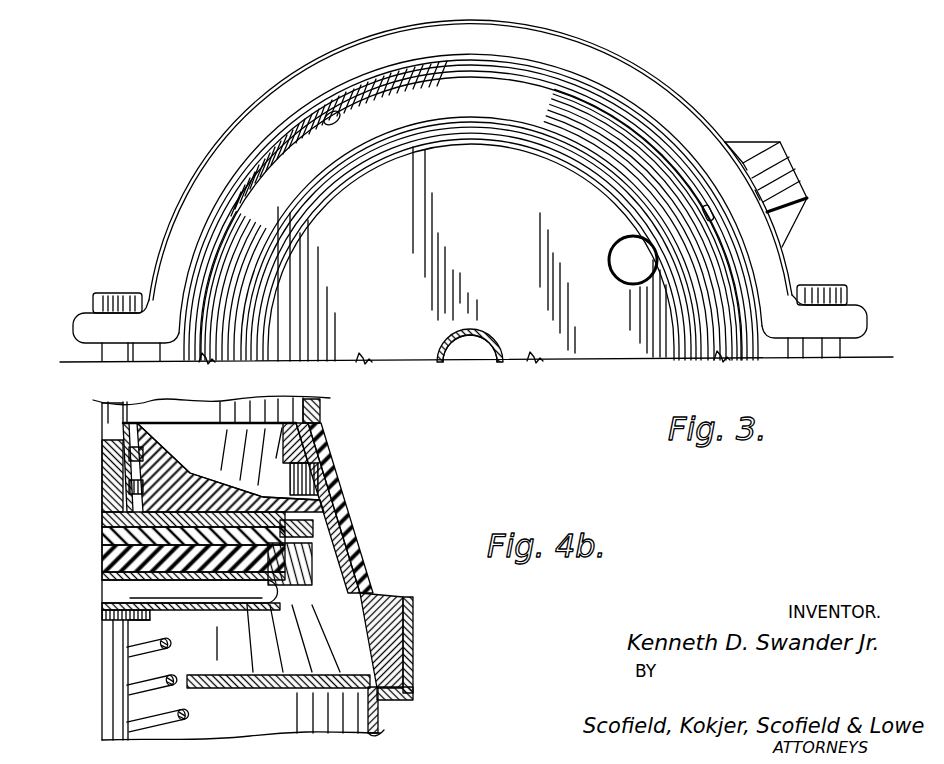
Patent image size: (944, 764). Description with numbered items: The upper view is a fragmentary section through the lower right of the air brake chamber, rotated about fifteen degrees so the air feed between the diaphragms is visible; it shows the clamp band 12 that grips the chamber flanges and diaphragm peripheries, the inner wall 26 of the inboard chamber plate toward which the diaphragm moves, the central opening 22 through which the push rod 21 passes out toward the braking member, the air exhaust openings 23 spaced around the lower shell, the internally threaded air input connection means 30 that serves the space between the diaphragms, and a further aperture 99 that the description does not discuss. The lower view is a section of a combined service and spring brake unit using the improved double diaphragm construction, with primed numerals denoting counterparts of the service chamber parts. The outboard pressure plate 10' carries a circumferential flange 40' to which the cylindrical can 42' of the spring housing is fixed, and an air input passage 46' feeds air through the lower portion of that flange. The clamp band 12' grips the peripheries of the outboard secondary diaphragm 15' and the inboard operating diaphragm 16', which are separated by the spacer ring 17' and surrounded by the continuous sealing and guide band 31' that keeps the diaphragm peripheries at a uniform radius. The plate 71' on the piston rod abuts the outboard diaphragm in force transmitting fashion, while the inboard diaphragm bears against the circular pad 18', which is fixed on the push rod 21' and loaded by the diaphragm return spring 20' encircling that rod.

In FIG. 3, the clamp band 12 is at (476, 182).
In FIG. 3, the inner wall of chamber plate 26 is at (388, 222).
In FIG. 3, the hole 99 is at (620, 248).
In FIG. 3, the opening 22 is at (500, 312).
In FIG. 3, the push rod 21 is at (443, 340).
In FIG. 3, the air exhaust openings 23 is at (713, 213).
In FIG. 3, the air input connection means 30 is at (780, 157).
In FIG. 4B, the circumferential flange 40' is at (198, 392).
In FIG. 4B, the cylindrical can 42' is at (235, 407).
In FIG. 4B, the air input passage 46' is at (329, 459).
In FIG. 4B, the plate 71' is at (230, 467).
In FIG. 4B, the outboard pressure plate 10' is at (348, 508).
In FIG. 4B, the outboard secondary diaphragm 15' is at (344, 508).
In FIG. 4B, the sealing and guide band 31' is at (423, 630).
In FIG. 4B, the spacer ring 17' is at (404, 640).
In FIG. 4B, the clamp band 12' is at (416, 692).
In FIG. 4B, the circular pad 18' is at (190, 607).
In FIG. 4B, the inboard diaphragm 16' is at (278, 637).
In FIG. 4B, the diaphragm return spring 20' is at (182, 684).
In FIG. 4B, the push rod 21' is at (110, 571).